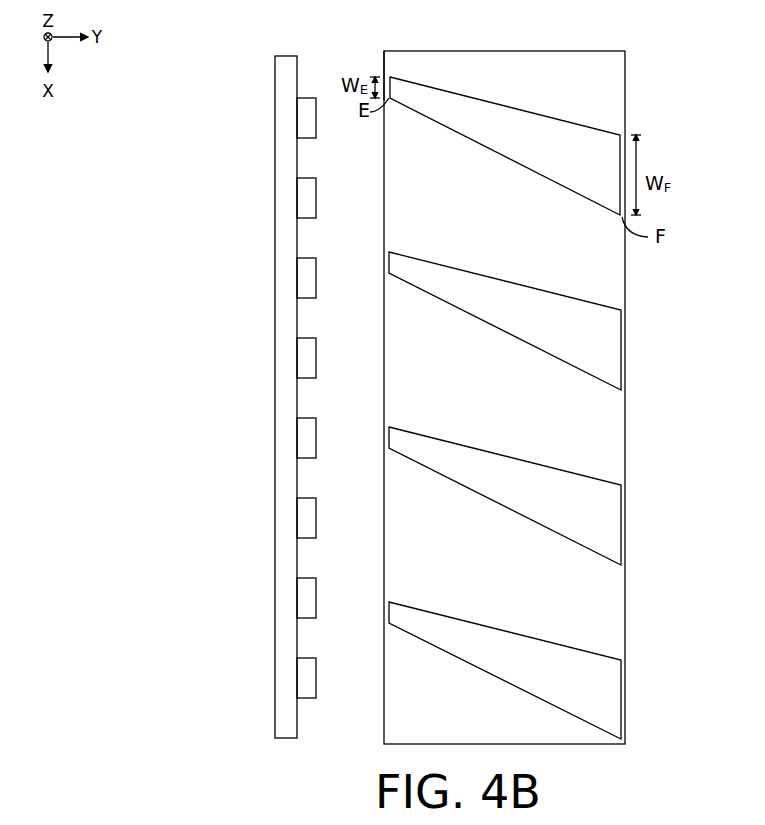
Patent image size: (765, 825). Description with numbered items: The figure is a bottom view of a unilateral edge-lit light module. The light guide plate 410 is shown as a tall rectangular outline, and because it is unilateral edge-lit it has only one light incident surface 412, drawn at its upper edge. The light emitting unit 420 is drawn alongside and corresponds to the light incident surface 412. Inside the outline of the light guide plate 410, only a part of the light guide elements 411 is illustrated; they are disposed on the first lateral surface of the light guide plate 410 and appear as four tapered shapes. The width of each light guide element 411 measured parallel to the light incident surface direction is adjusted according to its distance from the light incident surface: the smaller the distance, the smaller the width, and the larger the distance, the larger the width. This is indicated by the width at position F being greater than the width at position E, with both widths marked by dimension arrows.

The light guide plate 410 is at (494, 62).
The light guide elements 411 is at (607, 132).
The light incident surface 412 is at (383, 63).
The light emitting unit 420 is at (290, 56).